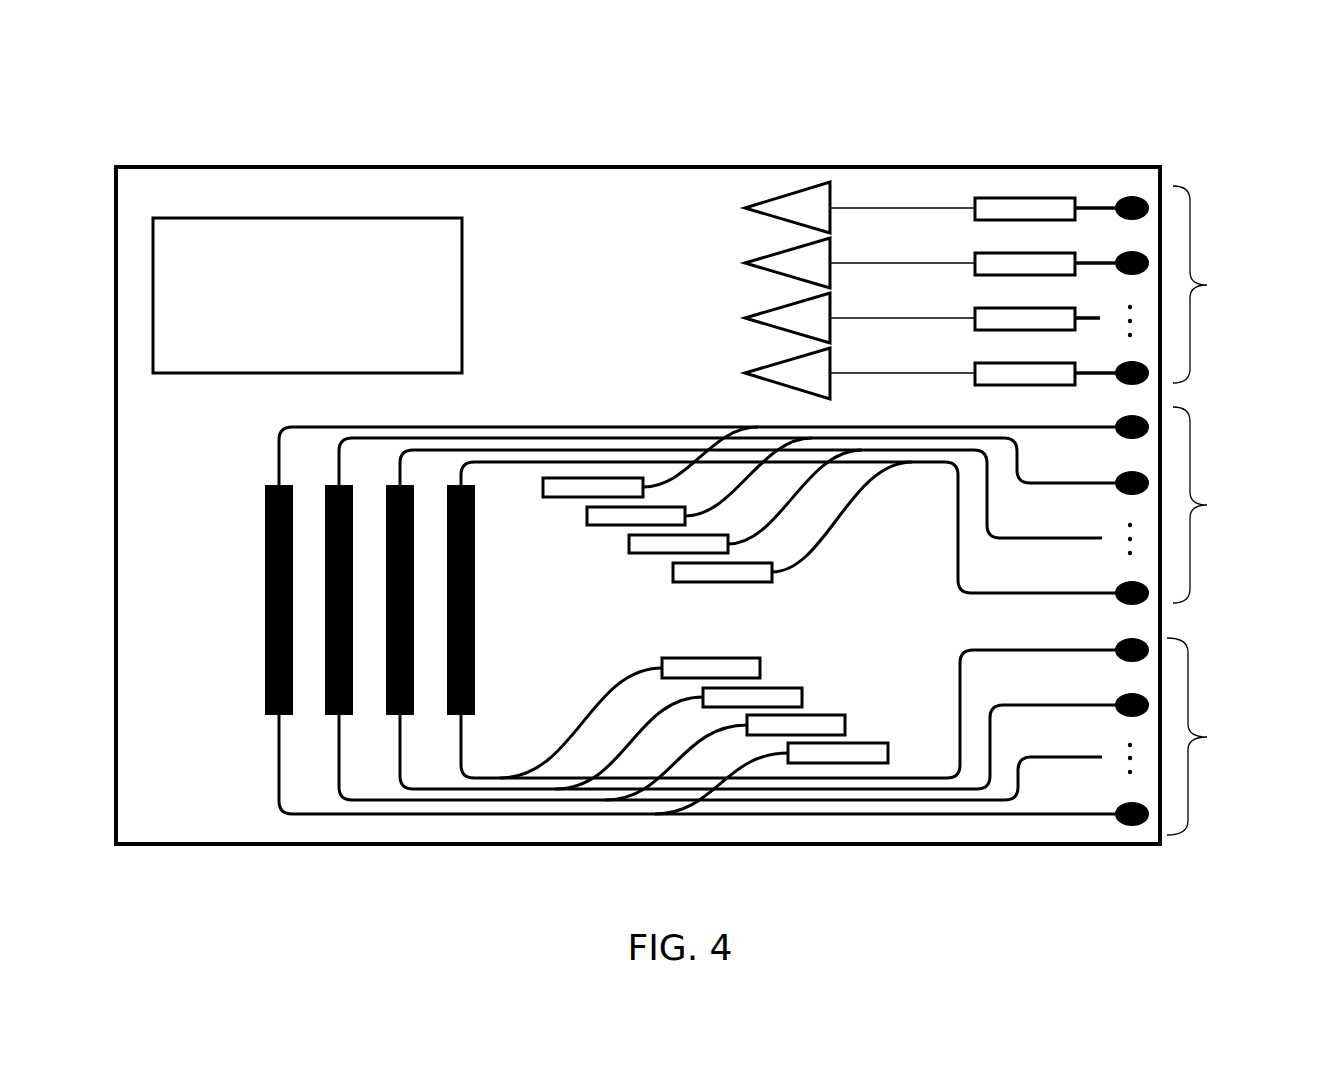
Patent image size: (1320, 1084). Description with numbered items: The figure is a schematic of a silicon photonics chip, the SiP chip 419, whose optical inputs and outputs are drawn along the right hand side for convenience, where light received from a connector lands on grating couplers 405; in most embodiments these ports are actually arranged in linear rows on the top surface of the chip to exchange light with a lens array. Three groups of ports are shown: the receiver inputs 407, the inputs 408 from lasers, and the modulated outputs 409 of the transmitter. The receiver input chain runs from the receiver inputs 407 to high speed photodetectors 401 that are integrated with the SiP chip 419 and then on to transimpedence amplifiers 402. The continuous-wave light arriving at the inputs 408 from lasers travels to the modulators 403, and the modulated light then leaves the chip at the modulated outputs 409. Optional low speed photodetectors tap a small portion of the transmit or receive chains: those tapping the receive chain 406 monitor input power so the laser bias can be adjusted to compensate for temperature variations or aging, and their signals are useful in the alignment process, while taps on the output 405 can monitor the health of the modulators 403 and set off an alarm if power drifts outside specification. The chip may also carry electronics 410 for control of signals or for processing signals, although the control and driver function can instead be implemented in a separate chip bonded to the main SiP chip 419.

The SiP chip 419 is at (533, 167).
The electronics 410 is at (307, 295).
The transimpedence amplifiers 402 is at (790, 205).
The high speed photodetectors 401 is at (1018, 210).
The grating couplers 405 is at (1132, 205).
The modulators 403 is at (265, 607).
The low speed photodetectors tapping the receive chain 406 is at (672, 573).
The receiver inputs 407 is at (1230, 284).
The inputs from lasers 408 is at (1230, 505).
The modulated outputs 409 is at (1221, 736).